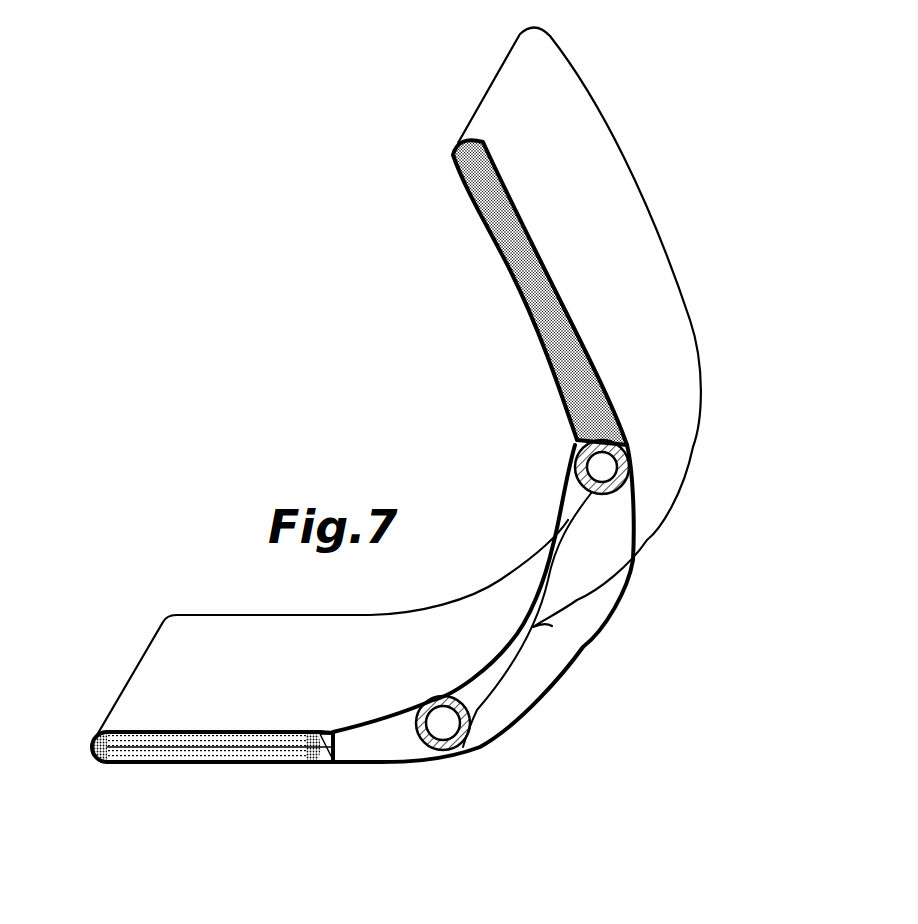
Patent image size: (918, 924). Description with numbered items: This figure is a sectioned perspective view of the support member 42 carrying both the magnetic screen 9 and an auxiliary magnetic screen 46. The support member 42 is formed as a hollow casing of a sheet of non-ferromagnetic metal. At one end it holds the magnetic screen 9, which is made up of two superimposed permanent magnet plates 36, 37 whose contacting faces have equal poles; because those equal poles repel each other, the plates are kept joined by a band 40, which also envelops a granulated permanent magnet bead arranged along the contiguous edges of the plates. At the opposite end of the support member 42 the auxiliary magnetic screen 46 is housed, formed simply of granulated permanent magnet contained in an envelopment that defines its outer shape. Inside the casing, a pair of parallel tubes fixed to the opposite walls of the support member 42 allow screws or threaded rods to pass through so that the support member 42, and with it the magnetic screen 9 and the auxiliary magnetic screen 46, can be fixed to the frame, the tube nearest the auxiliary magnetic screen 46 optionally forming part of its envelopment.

The magnetic screen 9 is at (226, 628).
The permanent magnet plate 36 is at (160, 763).
The permanent magnet plate 37 is at (245, 737).
The band 40 is at (330, 738).
The support member 42 is at (570, 662).
The auxiliary magnetic screen 46 is at (501, 262).